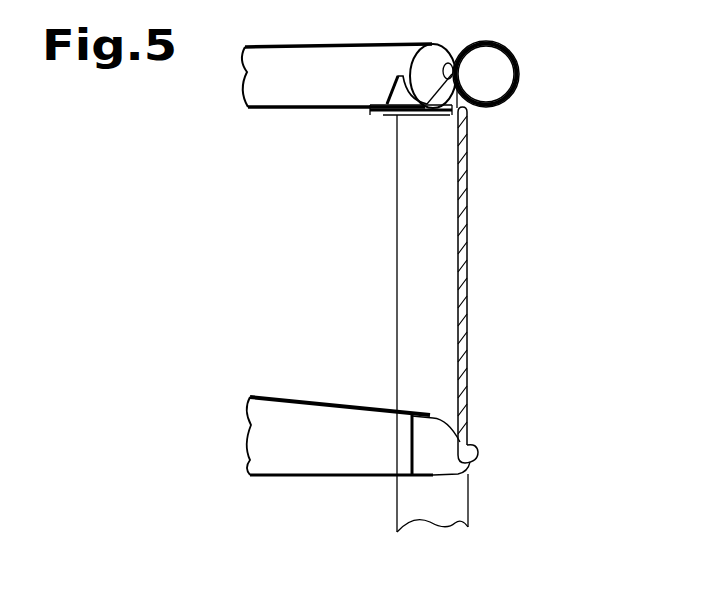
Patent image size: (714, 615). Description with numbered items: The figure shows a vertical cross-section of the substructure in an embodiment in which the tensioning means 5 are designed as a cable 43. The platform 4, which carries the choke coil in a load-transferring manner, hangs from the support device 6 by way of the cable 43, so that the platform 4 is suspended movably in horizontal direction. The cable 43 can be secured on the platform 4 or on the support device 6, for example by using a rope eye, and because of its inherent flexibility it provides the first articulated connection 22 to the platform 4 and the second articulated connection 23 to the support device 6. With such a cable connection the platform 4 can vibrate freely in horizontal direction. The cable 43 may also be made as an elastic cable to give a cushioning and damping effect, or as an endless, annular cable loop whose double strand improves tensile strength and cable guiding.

The platform 4 is at (340, 483).
The tensioning means 5 is at (497, 298).
The support device 6 is at (532, 90).
The first articulated connection 22 is at (490, 440).
The second articulated connection 23 is at (517, 118).
The cable 43 is at (469, 229).